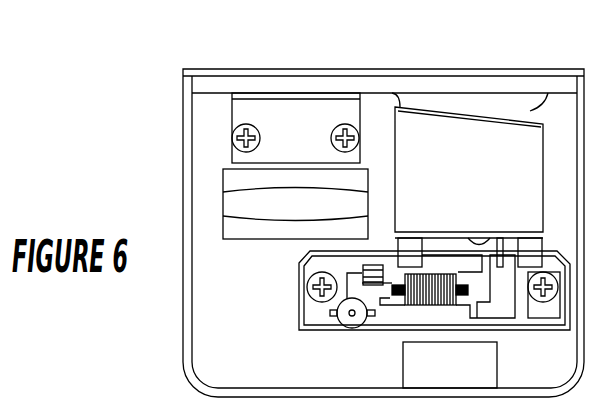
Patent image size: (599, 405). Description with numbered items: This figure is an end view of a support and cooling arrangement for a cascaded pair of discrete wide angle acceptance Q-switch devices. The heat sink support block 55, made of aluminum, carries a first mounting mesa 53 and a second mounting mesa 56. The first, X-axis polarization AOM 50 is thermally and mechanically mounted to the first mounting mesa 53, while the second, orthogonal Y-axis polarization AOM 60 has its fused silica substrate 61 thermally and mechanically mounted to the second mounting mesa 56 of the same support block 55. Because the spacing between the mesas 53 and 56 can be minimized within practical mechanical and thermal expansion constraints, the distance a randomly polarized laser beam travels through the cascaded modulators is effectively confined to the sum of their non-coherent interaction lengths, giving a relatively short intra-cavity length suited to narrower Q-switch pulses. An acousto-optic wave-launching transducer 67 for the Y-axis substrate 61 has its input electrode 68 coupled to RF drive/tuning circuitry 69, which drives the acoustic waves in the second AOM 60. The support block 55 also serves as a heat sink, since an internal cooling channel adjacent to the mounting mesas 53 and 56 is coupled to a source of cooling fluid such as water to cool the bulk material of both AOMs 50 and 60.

The first AOM 50 is at (267, 240).
The first mounting mesa 53 is at (242, 108).
The heat sink support block 55 is at (463, 88).
The second mounting mesa 56 is at (529, 110).
The second AOM 60 is at (505, 182).
The fused silica substrate 61 is at (530, 175).
The acousto-optic wave-launching transducer 67 is at (533, 237).
The input electrode 68 is at (480, 247).
The RF drive/tuning circuitry 69 is at (307, 328).